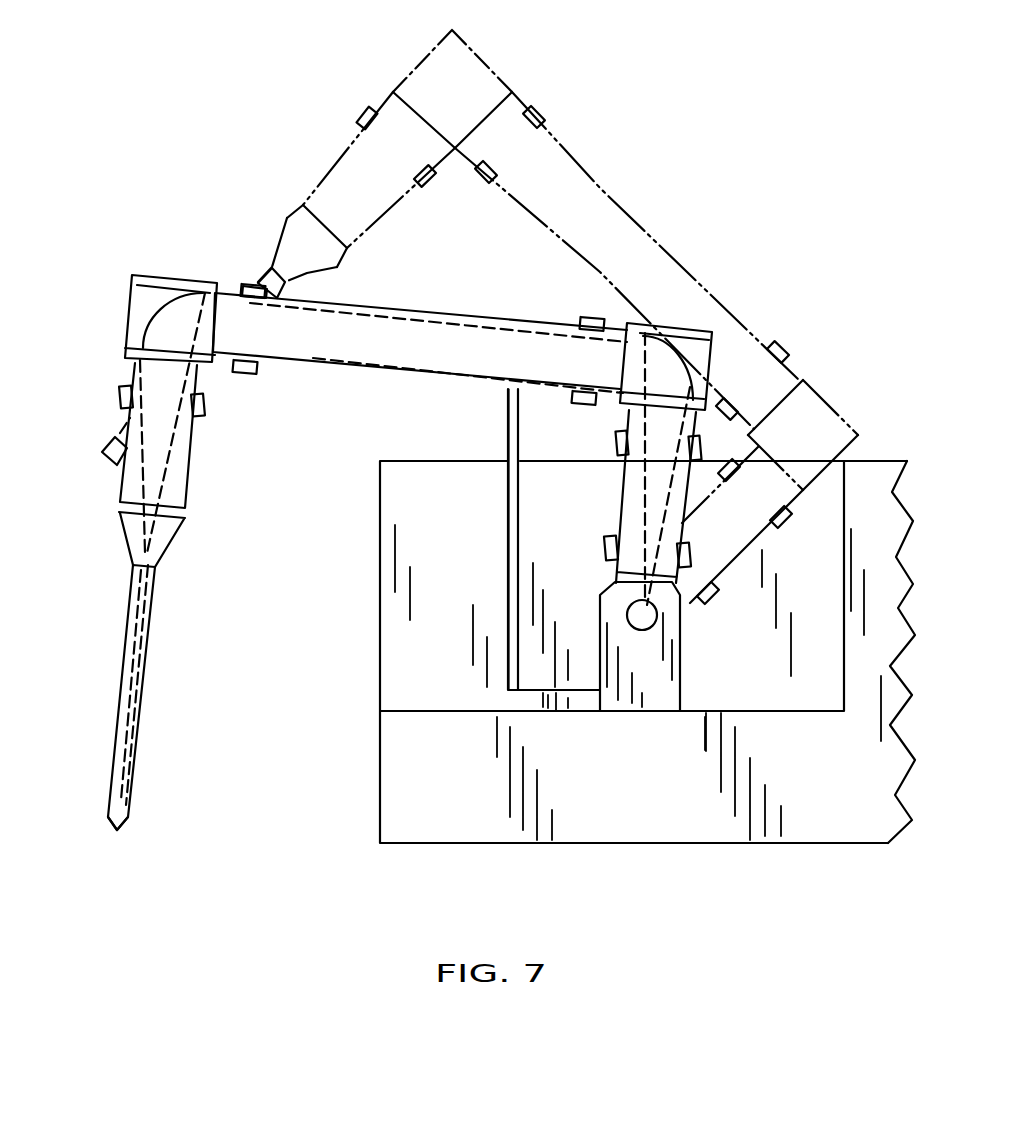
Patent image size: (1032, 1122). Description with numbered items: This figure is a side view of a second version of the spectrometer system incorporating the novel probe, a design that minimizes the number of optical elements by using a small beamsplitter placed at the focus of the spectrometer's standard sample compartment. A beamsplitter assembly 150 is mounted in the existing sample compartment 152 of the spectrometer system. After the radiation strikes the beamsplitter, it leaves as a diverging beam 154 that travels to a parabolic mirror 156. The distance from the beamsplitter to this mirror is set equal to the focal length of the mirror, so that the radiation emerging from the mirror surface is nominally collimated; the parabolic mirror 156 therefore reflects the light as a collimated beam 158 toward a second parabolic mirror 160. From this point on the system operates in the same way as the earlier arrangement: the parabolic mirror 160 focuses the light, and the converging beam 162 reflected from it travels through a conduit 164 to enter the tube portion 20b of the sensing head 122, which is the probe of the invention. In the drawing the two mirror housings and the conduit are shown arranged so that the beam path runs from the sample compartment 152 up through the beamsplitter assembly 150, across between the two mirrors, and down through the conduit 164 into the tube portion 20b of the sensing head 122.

The beamsplitter assembly 150 is at (705, 664).
The sample compartment 152 is at (826, 653).
The diverging beam 154 is at (643, 512).
The parabolic mirror 156 is at (673, 358).
The collimated beam 158 is at (350, 367).
The parabolic mirror 160 is at (163, 308).
The converging beam 162 is at (165, 463).
The conduit 164 is at (187, 483).
The tube portion 20b is at (147, 667).
The sensing head 122 is at (96, 834).